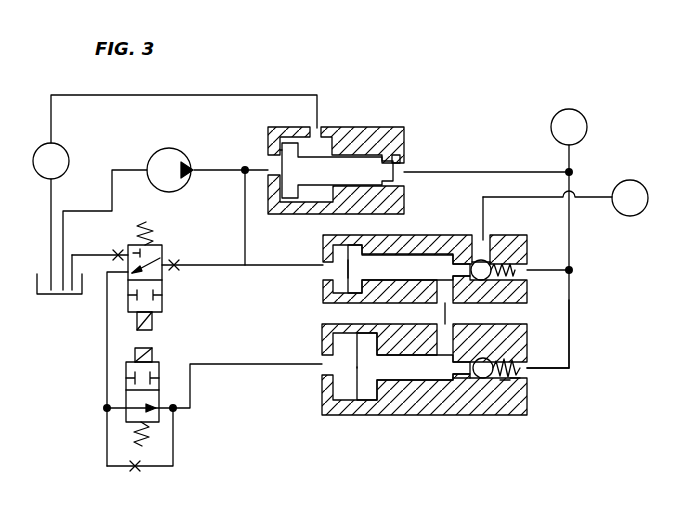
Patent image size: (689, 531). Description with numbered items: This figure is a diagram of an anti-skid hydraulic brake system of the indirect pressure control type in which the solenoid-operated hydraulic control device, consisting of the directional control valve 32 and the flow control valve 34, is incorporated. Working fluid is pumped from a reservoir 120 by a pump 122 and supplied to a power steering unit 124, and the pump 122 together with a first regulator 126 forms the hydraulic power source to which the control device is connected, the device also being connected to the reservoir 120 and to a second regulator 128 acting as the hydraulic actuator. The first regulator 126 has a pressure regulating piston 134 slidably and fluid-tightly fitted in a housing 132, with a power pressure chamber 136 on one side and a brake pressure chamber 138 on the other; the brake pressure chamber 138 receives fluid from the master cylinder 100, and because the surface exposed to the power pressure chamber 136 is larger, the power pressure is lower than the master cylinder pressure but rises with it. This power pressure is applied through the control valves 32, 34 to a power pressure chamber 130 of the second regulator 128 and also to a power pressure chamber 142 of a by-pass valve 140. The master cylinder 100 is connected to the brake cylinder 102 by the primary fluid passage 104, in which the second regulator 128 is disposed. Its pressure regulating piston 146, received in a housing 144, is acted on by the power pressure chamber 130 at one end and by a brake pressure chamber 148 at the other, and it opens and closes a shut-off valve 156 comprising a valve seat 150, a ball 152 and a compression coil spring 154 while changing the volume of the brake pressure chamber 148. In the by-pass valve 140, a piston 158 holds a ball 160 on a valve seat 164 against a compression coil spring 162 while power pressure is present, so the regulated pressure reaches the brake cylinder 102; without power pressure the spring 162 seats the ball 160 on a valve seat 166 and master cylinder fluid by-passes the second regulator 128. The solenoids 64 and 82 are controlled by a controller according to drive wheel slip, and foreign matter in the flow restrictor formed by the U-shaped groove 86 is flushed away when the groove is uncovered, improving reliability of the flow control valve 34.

The directional control valve 32 is at (166, 243).
The flow control valve 34 is at (167, 366).
The solenoid 64 is at (153, 322).
The solenoid 82 is at (135, 353).
The U-shaped groove 86 is at (124, 476).
The master cylinder 100 is at (551, 124).
The brake cylinder 102 is at (630, 190).
The primary fluid passage 104 is at (572, 352).
The reservoir 120 is at (56, 296).
The pump 122 is at (158, 156).
The power steering unit 124 is at (58, 157).
The first regulator 126 is at (335, 137).
The second regulator 128 is at (421, 403).
The power pressure chamber 130 is at (338, 410).
The housing 132 is at (398, 129).
The pressure regulating piston 134 is at (340, 156).
The power pressure chamber 136 is at (270, 160).
The brake pressure chamber 138 is at (402, 160).
The by-pass valve 140 is at (445, 263).
The power pressure chamber 142 is at (334, 283).
The housing 144 is at (366, 416).
The pressure regulating piston 146 is at (348, 383).
The brake pressure chamber 148 is at (458, 392).
The valve seat 150 is at (481, 378).
The ball 152 is at (488, 385).
The compression coil spring 154 is at (515, 385).
The shut-off valve 156 is at (505, 395).
The piston 158 is at (352, 300).
The ball 160 is at (488, 278).
The compression coil spring 162 is at (520, 277).
The valve seat 164 is at (488, 263).
The valve seat 166 is at (481, 262).